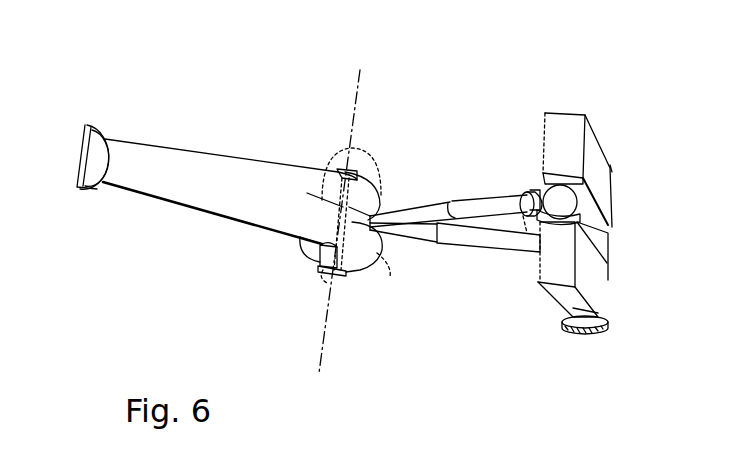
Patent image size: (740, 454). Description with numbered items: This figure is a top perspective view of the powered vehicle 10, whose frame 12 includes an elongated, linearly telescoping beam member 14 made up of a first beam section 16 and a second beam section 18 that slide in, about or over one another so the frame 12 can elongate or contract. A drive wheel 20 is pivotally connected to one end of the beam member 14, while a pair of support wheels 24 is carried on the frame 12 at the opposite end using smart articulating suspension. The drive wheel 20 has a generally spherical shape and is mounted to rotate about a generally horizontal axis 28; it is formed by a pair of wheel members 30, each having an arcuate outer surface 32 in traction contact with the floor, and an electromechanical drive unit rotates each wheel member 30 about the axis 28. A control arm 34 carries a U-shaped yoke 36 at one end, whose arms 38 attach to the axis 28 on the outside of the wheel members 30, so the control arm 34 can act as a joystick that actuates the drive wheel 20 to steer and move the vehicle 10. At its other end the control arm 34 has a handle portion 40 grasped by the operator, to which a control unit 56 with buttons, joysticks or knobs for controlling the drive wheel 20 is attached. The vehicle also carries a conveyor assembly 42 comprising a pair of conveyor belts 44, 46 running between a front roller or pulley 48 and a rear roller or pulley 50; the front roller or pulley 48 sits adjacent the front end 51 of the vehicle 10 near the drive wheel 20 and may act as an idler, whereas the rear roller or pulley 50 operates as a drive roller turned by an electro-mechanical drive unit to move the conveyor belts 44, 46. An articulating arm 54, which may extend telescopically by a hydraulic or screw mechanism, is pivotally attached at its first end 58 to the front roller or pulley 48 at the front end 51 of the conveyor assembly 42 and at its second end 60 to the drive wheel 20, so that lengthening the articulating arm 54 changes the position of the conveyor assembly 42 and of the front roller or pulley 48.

The powered vehicle 10 is at (424, 136).
The frame 12 is at (477, 254).
The beam member 14 is at (460, 252).
The first beam section 16 is at (424, 243).
The second beam section 18 is at (501, 250).
The drive wheel 20 is at (300, 255).
The support wheels 24 is at (613, 170).
The axis 28 is at (326, 345).
The wheel members 30 is at (362, 172).
The arcuate outer surface 32 is at (372, 192).
The control arm 34 is at (187, 165).
The yoke 36 is at (307, 193).
The arms 38 is at (340, 168).
The handle portion 40 is at (95, 190).
The conveyor assembly 42 is at (596, 116).
The conveyor belt 44 is at (594, 292).
The conveyor belt 46 is at (598, 150).
The front roller or pulley 48 is at (517, 253).
The rear roller or pulley 50 is at (598, 238).
The front end 51 is at (555, 128).
The articulating arm 54 is at (463, 202).
The control unit 56 is at (78, 162).
The first end 58 is at (573, 202).
The second end 60 is at (346, 276).